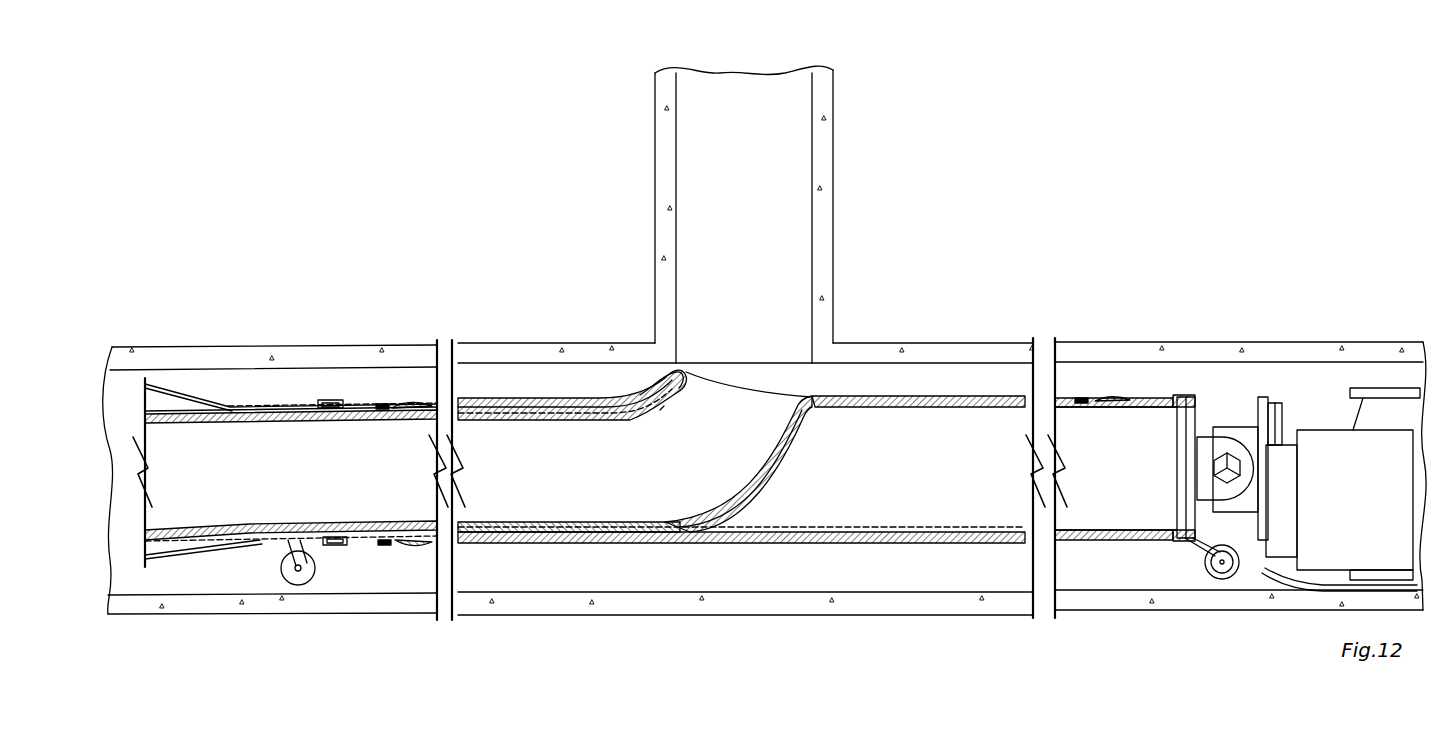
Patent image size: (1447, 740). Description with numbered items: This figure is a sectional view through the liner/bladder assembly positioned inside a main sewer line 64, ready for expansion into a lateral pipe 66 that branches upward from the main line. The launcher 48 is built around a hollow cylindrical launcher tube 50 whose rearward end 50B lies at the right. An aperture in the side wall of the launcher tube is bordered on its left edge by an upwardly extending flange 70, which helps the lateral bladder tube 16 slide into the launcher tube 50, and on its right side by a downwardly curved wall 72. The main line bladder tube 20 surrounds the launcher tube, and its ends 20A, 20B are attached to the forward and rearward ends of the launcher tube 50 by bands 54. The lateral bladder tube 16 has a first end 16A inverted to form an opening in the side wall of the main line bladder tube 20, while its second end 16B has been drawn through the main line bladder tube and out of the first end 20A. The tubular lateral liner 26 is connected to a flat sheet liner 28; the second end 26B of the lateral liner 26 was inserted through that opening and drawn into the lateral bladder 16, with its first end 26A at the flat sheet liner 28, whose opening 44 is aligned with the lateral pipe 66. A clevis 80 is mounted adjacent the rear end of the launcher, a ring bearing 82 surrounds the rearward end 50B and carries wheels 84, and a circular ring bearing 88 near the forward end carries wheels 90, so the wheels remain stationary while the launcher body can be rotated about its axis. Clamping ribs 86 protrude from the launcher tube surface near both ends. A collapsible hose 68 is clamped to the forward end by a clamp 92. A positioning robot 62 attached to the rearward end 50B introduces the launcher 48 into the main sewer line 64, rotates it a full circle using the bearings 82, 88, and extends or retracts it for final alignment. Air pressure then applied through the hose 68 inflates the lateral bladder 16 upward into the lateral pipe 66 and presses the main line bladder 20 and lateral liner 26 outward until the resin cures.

The lateral bladder tube 16 is at (515, 421).
The first end of lateral bladder tube 16A is at (651, 410).
The second end of lateral bladder tube 16B is at (178, 424).
The main line bladder tube 20 is at (538, 412).
The first end of main line bladder tube 20A is at (380, 410).
The second end of main line bladder tube 20B is at (1110, 540).
The lateral liner 26 is at (561, 404).
The first end of lateral liner 26A is at (670, 390).
The second end of lateral liner 26B is at (243, 424).
The flat sheet liner 28 is at (915, 393).
The opening of flat sheet liner 44 is at (740, 402).
The launcher 48 is at (1127, 545).
The launcher tube 50 is at (975, 526).
The rearward end of launcher tube 50B is at (1153, 398).
The bands 54 is at (383, 403).
The positioning robot 62 is at (1345, 410).
The main sewer line 64 is at (988, 347).
The lateral pipe 66 is at (832, 178).
The collapsible hose 68 is at (210, 398).
The upwardly extending flange 70 is at (655, 387).
The downwardly curved wall 72 is at (778, 476).
The clevis 80 is at (1207, 459).
The ring bearing 82 is at (1192, 545).
The wheels 84 is at (1222, 579).
The clamping ribs 86 is at (415, 400).
The circular ring bearing 88 is at (333, 400).
The wheels 90 is at (300, 585).
The clamp 92 is at (282, 571).